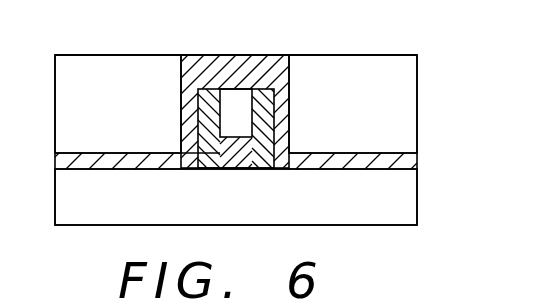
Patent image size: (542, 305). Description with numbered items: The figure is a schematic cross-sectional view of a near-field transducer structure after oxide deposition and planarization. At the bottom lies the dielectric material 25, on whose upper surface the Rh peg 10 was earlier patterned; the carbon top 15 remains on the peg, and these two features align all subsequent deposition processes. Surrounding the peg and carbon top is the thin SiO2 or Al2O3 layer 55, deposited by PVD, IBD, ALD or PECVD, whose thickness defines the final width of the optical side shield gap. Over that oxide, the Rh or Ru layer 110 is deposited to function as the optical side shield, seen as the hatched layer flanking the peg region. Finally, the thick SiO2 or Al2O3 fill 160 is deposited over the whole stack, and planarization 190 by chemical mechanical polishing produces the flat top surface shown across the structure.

The Rh peg 10 is at (182, 151).
The carbon top 15 is at (237, 103).
The dielectric material 25 is at (405, 202).
The SiO2 or Al2O3 layer 55 is at (207, 102).
The Rh or Ru layer 110 is at (407, 162).
The SiO2 or Al2O3 fill 160 is at (407, 132).
The planarization 190 is at (389, 55).